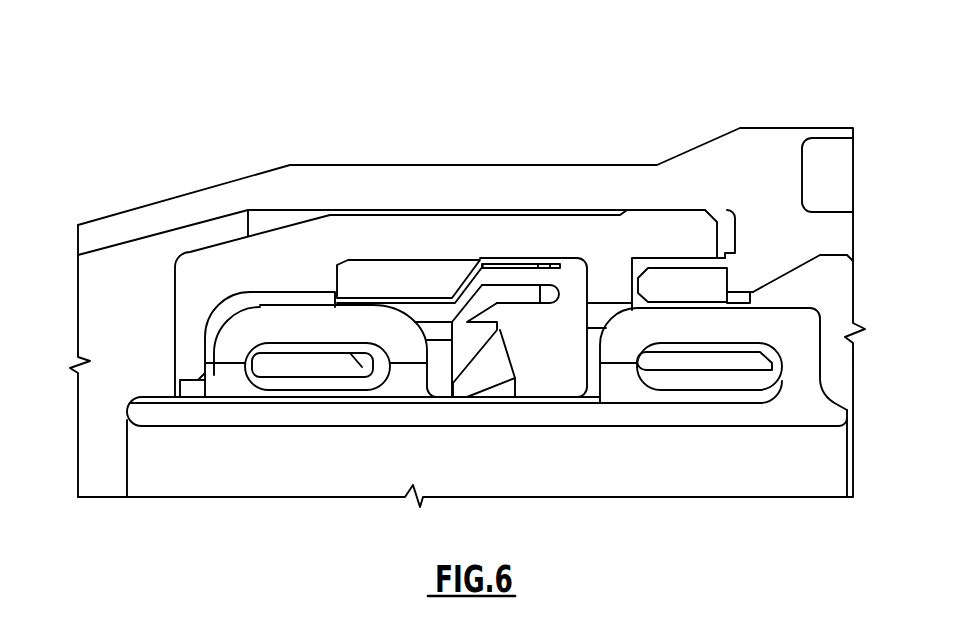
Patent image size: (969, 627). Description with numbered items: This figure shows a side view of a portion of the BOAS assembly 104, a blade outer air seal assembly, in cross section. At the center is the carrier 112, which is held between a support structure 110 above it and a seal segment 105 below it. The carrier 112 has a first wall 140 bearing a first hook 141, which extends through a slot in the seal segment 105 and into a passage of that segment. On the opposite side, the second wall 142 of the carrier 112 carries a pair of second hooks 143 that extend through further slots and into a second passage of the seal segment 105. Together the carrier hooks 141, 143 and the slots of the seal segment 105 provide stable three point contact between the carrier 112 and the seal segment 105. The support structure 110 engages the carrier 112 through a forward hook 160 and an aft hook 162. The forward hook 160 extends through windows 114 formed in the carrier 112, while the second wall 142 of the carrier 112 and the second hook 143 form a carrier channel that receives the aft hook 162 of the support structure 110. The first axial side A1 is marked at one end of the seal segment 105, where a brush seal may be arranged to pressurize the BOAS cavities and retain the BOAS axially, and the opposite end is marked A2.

The BOAS assembly 104 is at (794, 110).
The seal segment 105 is at (798, 375).
The support structure 110 is at (613, 183).
The carrier 112 is at (570, 233).
The windows 114 is at (513, 267).
The first wall 140 is at (197, 302).
The first hook 141 is at (290, 368).
The second wall 142 is at (612, 287).
The second hooks 143 is at (730, 360).
The forward hook 160 is at (382, 283).
The aft hook 162 is at (682, 288).
The first axial side A1 is at (130, 417).
The second end point A2 is at (837, 413).